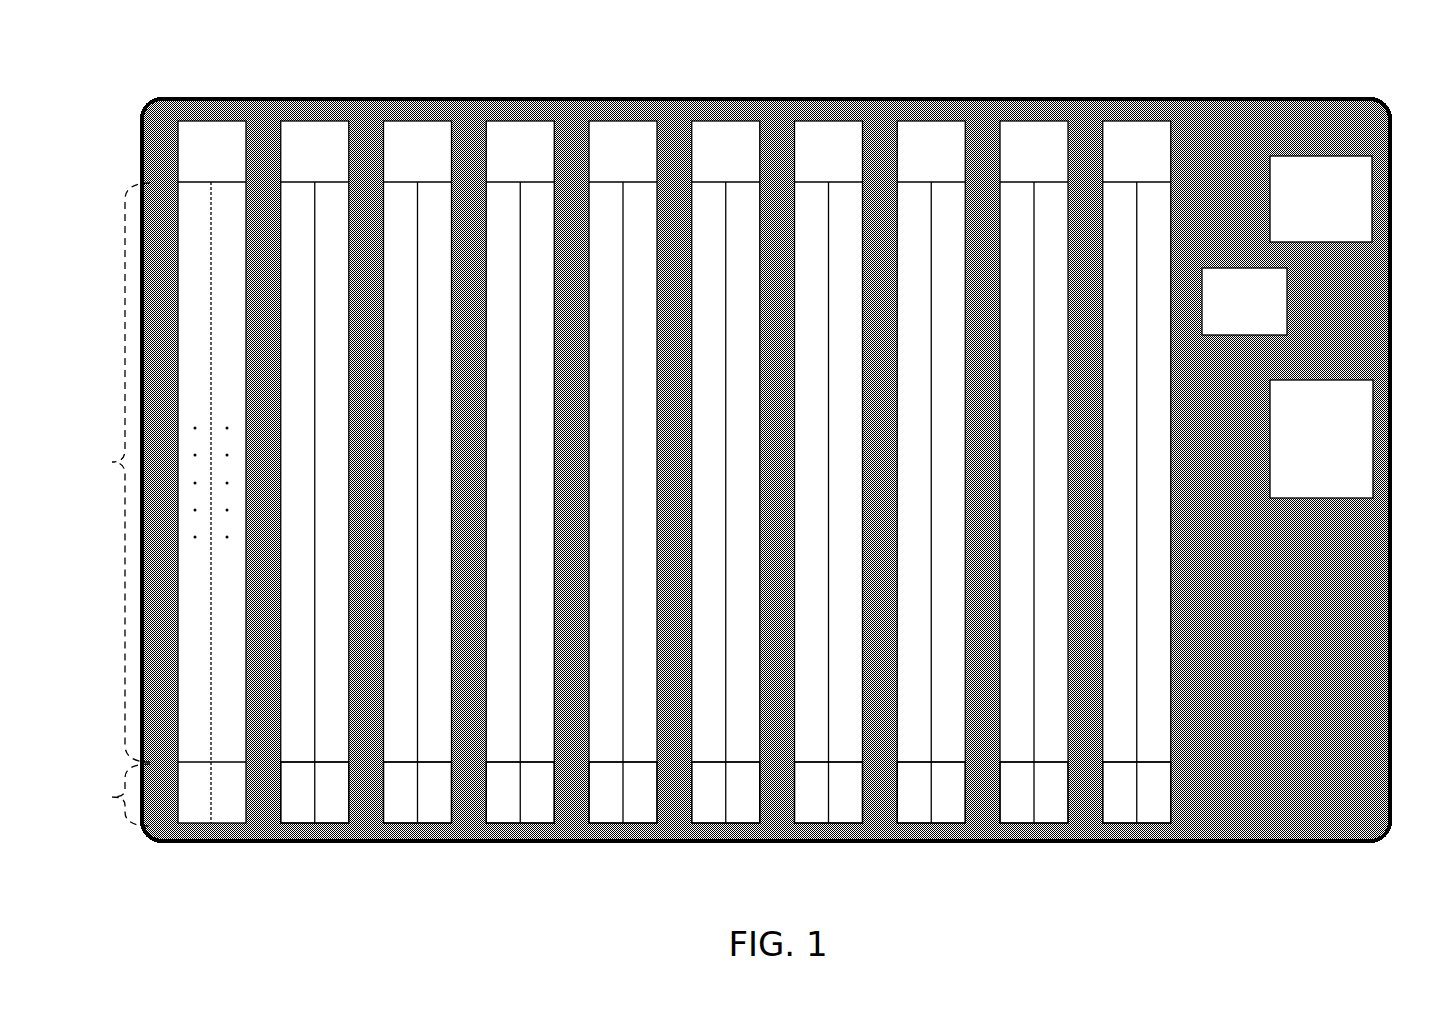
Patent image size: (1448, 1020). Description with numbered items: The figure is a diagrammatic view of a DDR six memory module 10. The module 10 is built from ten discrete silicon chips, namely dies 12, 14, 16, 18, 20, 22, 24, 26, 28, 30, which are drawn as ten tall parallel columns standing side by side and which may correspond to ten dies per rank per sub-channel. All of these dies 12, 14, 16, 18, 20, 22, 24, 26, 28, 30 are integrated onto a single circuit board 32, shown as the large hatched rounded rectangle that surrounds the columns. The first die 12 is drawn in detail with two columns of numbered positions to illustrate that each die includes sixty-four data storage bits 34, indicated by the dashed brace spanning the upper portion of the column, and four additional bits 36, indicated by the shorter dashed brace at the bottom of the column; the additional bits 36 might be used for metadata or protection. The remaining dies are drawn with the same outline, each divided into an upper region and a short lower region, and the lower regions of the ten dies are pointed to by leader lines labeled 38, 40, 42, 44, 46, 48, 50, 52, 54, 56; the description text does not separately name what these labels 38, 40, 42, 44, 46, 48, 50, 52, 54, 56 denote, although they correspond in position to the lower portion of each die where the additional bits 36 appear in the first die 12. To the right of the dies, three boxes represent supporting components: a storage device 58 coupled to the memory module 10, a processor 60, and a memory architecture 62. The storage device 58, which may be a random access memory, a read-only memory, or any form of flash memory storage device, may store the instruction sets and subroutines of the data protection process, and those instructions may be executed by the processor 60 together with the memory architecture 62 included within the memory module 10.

The DDR6 memory module 10 is at (119, 74).
The die 12 is at (173, 113).
The die 14 is at (276, 113).
The die 16 is at (378, 113).
The die 18 is at (481, 113).
The die 20 is at (584, 113).
The die 22 is at (687, 113).
The die 24 is at (790, 113).
The die 26 is at (892, 113).
The die 28 is at (995, 113).
The die 30 is at (1098, 113).
The circuit board 32 is at (1392, 672).
The data storage bits 34 is at (107, 462).
The additional bits 36 is at (107, 797).
The spare region of die 1 38 is at (172, 823).
The spare region of die 2 40 is at (275, 823).
The spare region of die 3 42 is at (378, 823).
The spare region of die 4 44 is at (480, 823).
The spare region of die 5 46 is at (583, 823).
The spare region of die 6 48 is at (686, 823).
The spare region of die 7 50 is at (788, 823).
The spare region of die 8 52 is at (891, 823).
The spare region of die 9 54 is at (994, 823).
The spare region of die 10 56 is at (1097, 823).
The storage device 58 is at (1321, 199).
The processor 60 is at (1244, 301).
The memory architecture 62 is at (1321, 439).